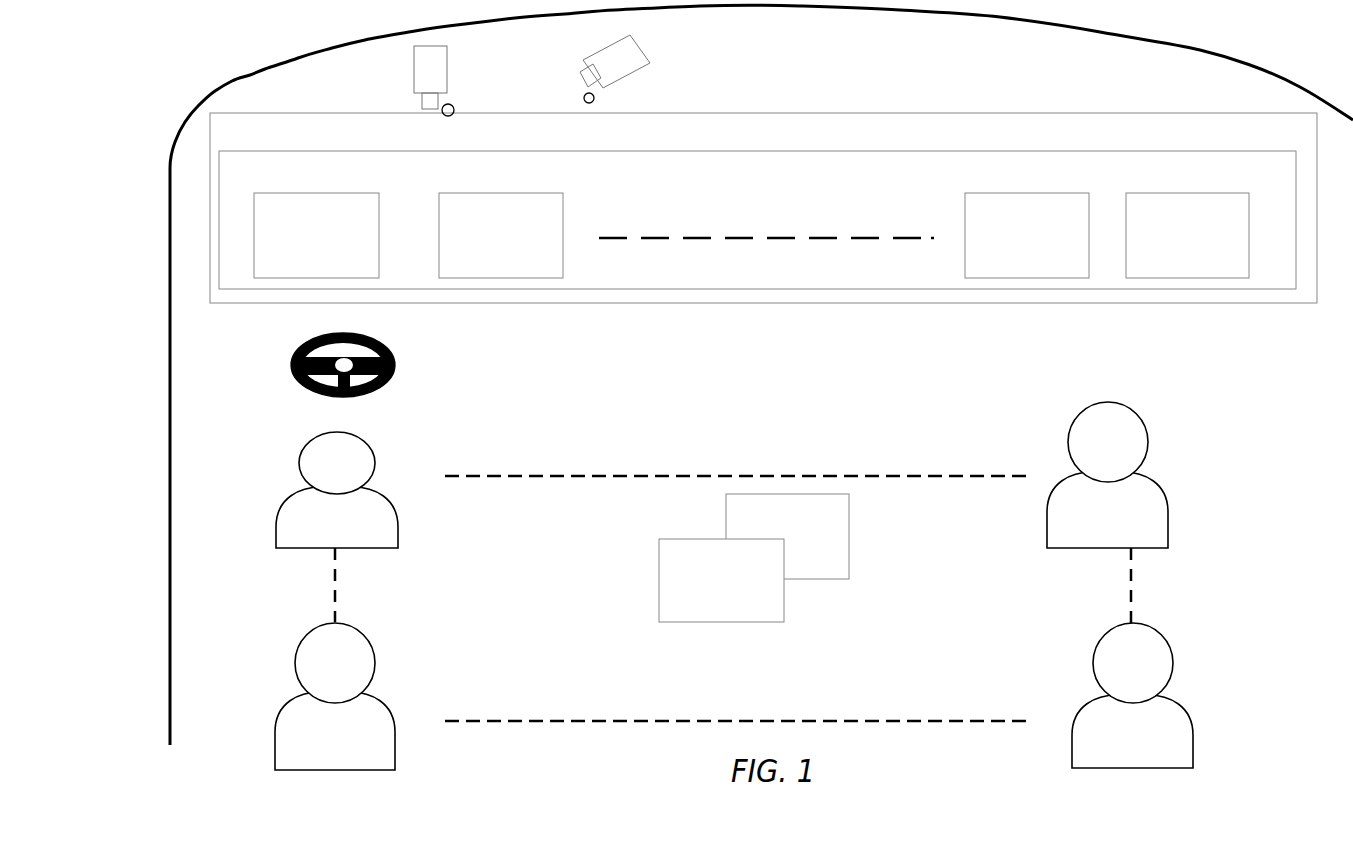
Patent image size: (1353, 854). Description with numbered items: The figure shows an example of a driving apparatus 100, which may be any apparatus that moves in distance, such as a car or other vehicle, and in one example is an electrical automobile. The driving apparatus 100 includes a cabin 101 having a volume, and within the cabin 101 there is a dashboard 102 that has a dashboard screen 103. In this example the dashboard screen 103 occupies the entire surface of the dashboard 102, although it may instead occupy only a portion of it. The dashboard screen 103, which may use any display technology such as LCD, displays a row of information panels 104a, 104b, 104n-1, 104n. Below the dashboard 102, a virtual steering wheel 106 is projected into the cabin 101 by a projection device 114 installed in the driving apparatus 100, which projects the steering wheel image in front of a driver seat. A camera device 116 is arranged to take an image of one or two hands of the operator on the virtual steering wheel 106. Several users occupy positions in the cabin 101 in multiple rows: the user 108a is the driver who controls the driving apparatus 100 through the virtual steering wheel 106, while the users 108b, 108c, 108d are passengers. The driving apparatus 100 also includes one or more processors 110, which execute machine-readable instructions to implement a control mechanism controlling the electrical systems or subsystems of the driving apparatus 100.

The driving apparatus 100 is at (1253, 68).
The cabin 101 is at (776, 62).
The dashboard 102 is at (845, 113).
The dashboard screen 103 is at (827, 150).
The information panel 104a is at (312, 193).
The information panel 104b is at (497, 193).
The information panel 104n-1 is at (1038, 178).
The information panel 104n is at (1188, 193).
The virtual steering wheel 106 is at (397, 353).
The user 108a is at (378, 470).
The user 108b is at (1130, 417).
The user 108c is at (370, 648).
The user 108d is at (1167, 648).
The processor 110 is at (732, 623).
The projection device 114 is at (445, 62).
The camera device 116 is at (645, 62).